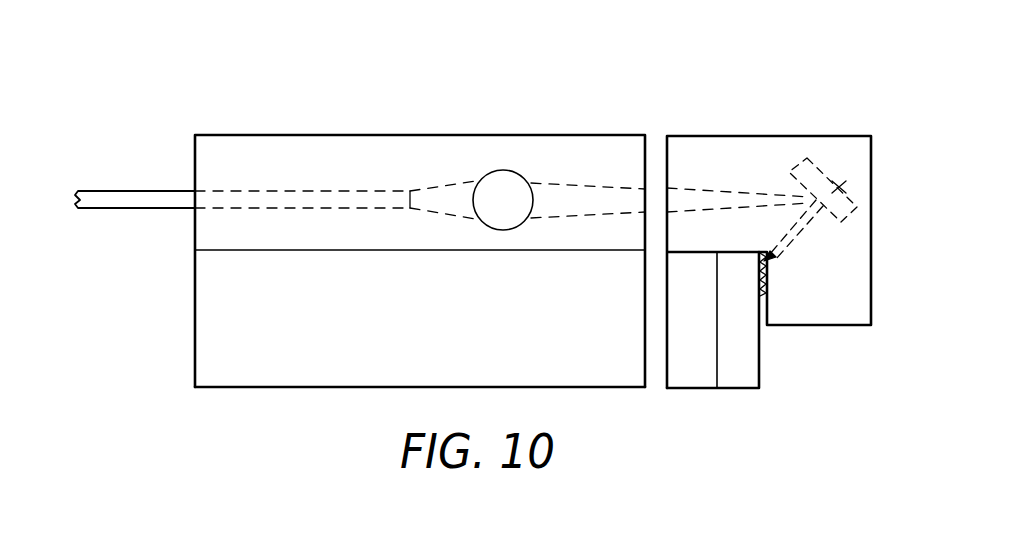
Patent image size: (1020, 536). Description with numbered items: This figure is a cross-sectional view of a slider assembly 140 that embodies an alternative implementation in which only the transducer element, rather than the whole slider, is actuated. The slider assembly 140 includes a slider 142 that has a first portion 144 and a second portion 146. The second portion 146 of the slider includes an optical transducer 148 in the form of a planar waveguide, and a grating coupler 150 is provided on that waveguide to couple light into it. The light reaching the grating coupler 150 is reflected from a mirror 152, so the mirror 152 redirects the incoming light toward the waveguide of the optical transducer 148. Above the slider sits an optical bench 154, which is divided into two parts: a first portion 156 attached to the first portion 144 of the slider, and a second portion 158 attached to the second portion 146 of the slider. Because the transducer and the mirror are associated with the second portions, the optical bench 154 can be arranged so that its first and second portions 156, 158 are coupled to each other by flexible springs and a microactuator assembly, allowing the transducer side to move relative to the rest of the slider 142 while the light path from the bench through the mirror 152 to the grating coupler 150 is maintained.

The slider assembly 140 is at (152, 108).
The slider 142 is at (238, 422).
The first portion 144 is at (212, 330).
The second portion 146 is at (694, 387).
The optical transducer 148 is at (740, 380).
The grating coupler 150 is at (768, 274).
The mirror 152 is at (848, 179).
The optical bench 154 is at (640, 112).
The first portion 156 is at (403, 147).
The second portion 158 is at (766, 148).